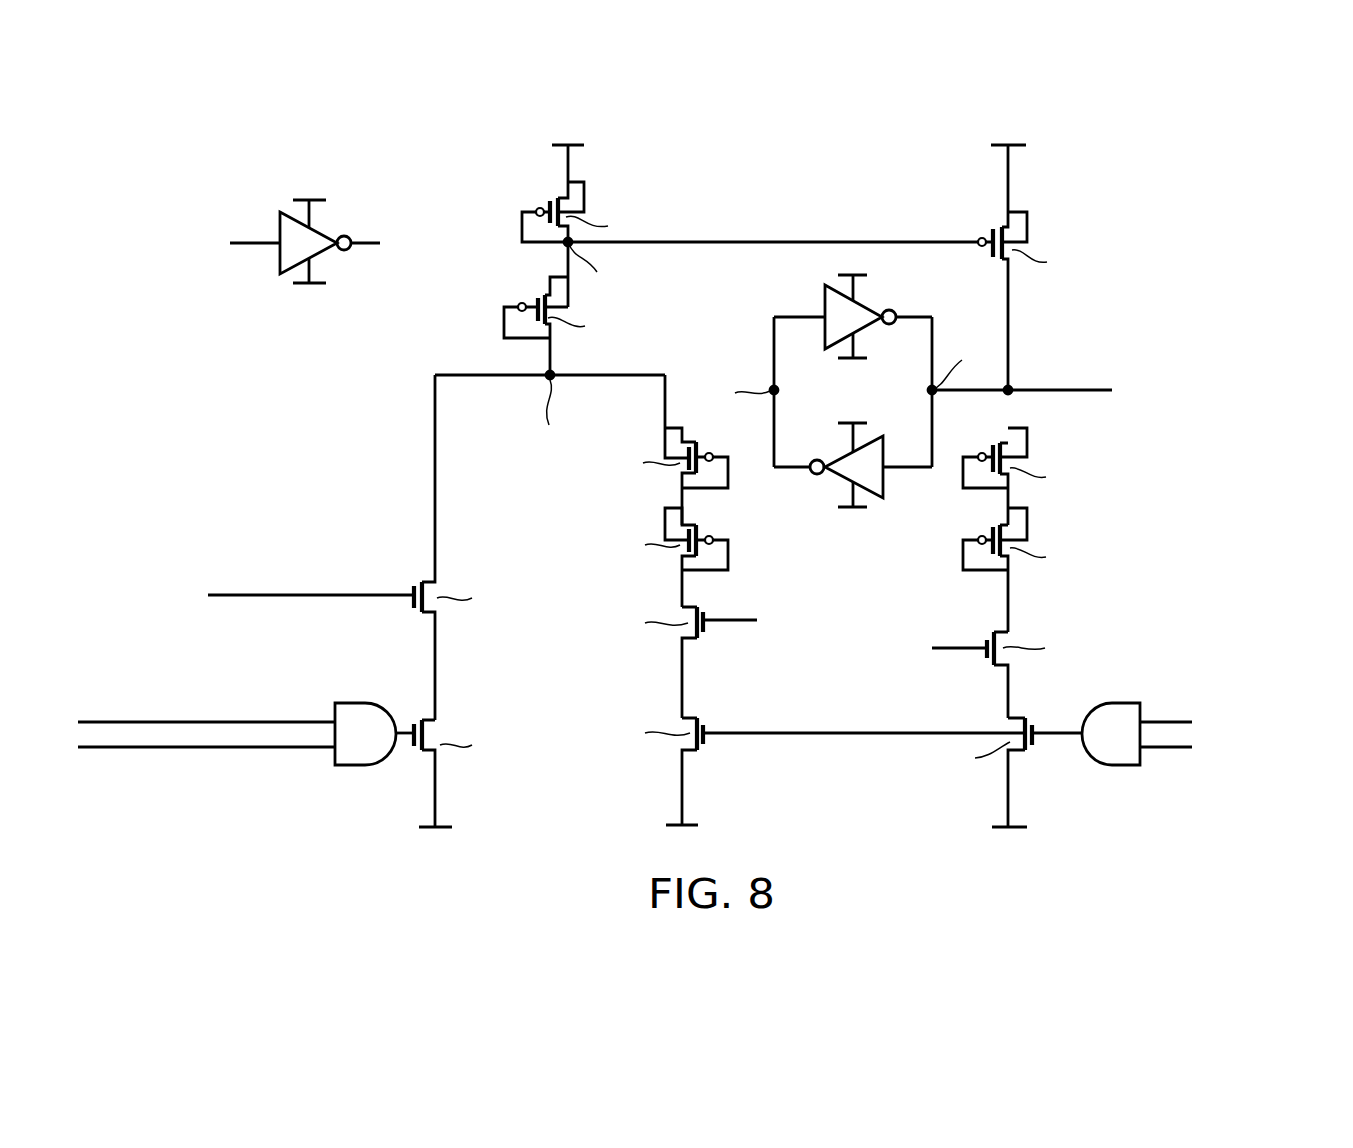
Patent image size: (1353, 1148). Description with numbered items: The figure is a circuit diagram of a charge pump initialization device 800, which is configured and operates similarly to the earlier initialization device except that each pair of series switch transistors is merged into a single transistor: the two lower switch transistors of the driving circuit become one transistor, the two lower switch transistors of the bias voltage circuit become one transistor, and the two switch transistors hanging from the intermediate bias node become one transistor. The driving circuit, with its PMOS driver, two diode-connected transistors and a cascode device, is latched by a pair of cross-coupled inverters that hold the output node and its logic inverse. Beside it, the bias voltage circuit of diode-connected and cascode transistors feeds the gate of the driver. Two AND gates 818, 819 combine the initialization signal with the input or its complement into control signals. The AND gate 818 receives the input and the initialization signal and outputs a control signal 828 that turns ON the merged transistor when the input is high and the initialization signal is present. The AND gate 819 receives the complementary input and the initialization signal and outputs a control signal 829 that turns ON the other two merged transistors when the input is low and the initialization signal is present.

The charge pump initialization device 800 is at (700, 478).
The AND gate 818 is at (350, 703).
The AND gate 819 is at (1128, 703).
The control signal 828 is at (400, 740).
The control signal 829 is at (1058, 738).